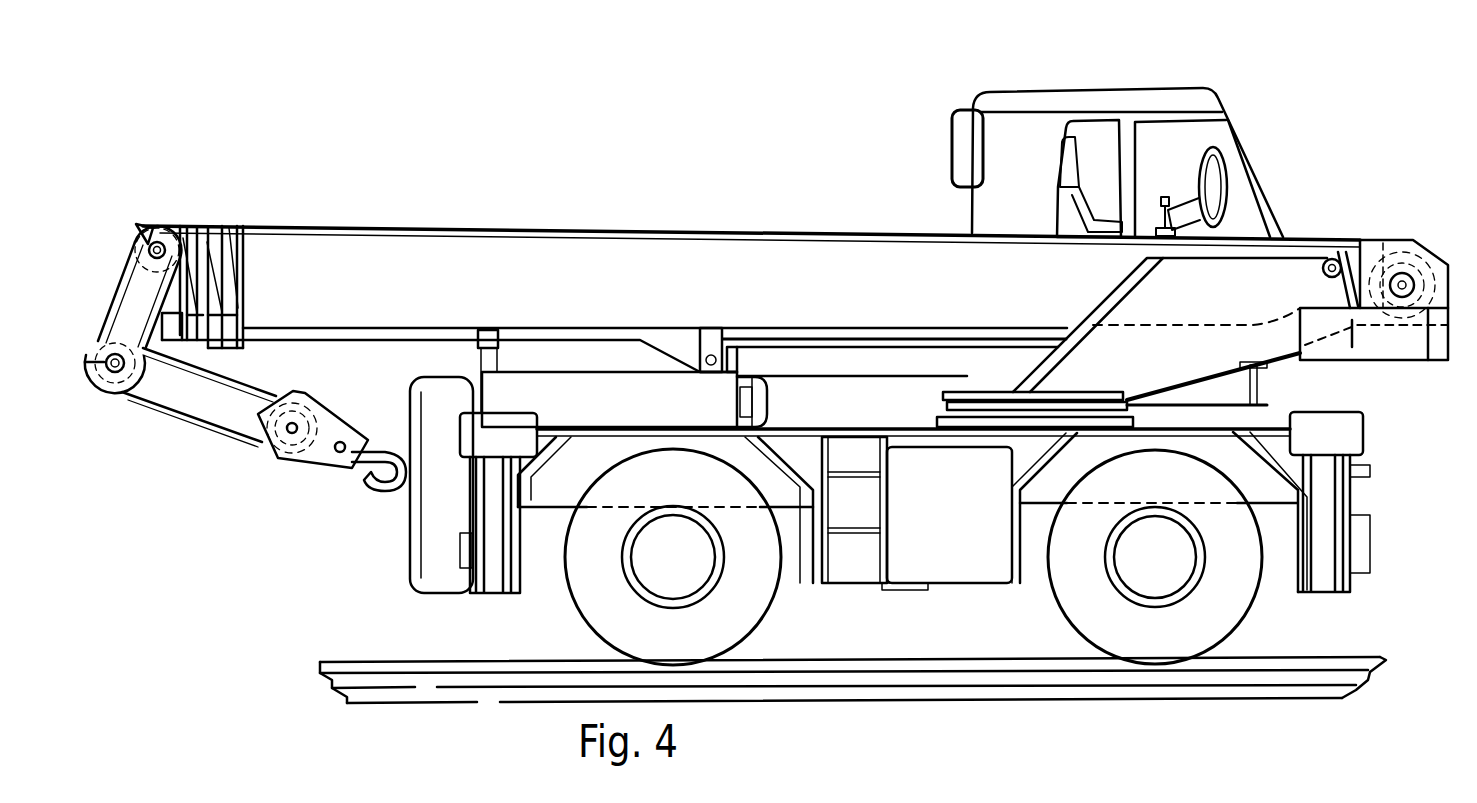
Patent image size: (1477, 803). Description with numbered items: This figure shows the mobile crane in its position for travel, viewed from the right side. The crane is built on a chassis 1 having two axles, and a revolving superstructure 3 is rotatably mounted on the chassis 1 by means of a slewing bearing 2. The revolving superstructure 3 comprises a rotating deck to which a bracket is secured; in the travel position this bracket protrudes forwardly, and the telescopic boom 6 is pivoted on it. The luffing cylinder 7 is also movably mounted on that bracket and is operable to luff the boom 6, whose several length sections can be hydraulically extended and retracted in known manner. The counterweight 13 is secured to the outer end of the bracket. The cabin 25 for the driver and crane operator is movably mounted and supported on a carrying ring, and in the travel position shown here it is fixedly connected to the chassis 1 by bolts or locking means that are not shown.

The chassis 1 is at (1060, 478).
The slewing bearing 2 is at (937, 423).
The revolving superstructure 3 is at (955, 397).
The telescopic boom 6 is at (432, 262).
The luffing cylinder 7 is at (800, 352).
The counterweight 13 is at (1383, 340).
The cabin 25 is at (1017, 156).